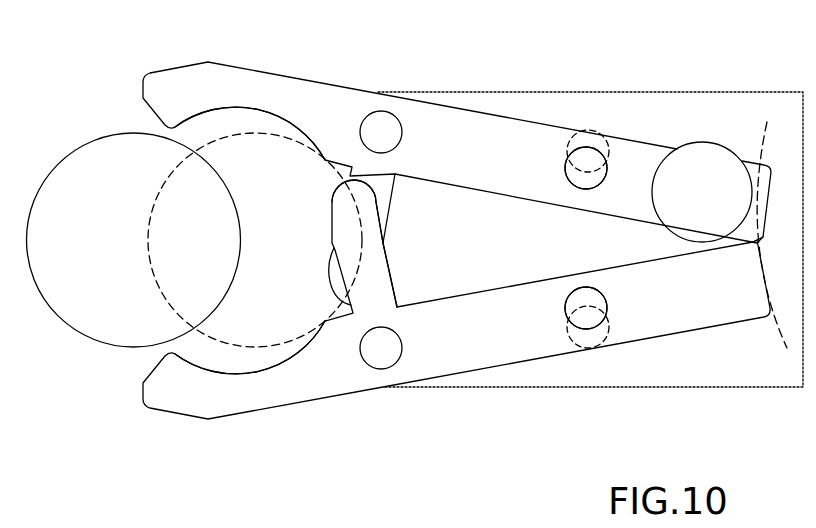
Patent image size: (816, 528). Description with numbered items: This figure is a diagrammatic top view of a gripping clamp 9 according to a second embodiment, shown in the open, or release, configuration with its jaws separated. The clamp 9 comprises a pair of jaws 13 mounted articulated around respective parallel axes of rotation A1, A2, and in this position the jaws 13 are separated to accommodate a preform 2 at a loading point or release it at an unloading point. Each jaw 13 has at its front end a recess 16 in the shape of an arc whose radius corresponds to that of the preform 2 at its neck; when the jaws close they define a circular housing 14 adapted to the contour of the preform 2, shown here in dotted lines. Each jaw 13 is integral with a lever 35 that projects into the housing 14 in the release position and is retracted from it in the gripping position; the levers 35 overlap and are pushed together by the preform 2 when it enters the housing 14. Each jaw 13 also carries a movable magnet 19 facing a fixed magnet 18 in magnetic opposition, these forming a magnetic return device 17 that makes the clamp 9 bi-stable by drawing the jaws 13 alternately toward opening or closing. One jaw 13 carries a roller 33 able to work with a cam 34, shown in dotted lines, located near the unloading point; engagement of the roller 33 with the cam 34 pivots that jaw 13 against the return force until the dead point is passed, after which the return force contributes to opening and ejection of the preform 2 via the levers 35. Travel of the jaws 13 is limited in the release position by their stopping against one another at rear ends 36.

The preform 2 is at (78, 150).
The clamp 9 is at (666, 86).
The jaws 13 is at (262, 82).
The housing 14 is at (292, 140).
The recess 16 is at (270, 115).
The magnetic return device 17 is at (558, 160).
The fixed magnet 18 is at (607, 142).
The movable magnet 19 is at (598, 183).
The roller 33 is at (711, 165).
The cam 34 is at (757, 268).
The lever 35 is at (338, 273).
The rear ends 36 is at (764, 238).
The axis of rotation A1 is at (381, 132).
The axis of rotation A2 is at (381, 348).